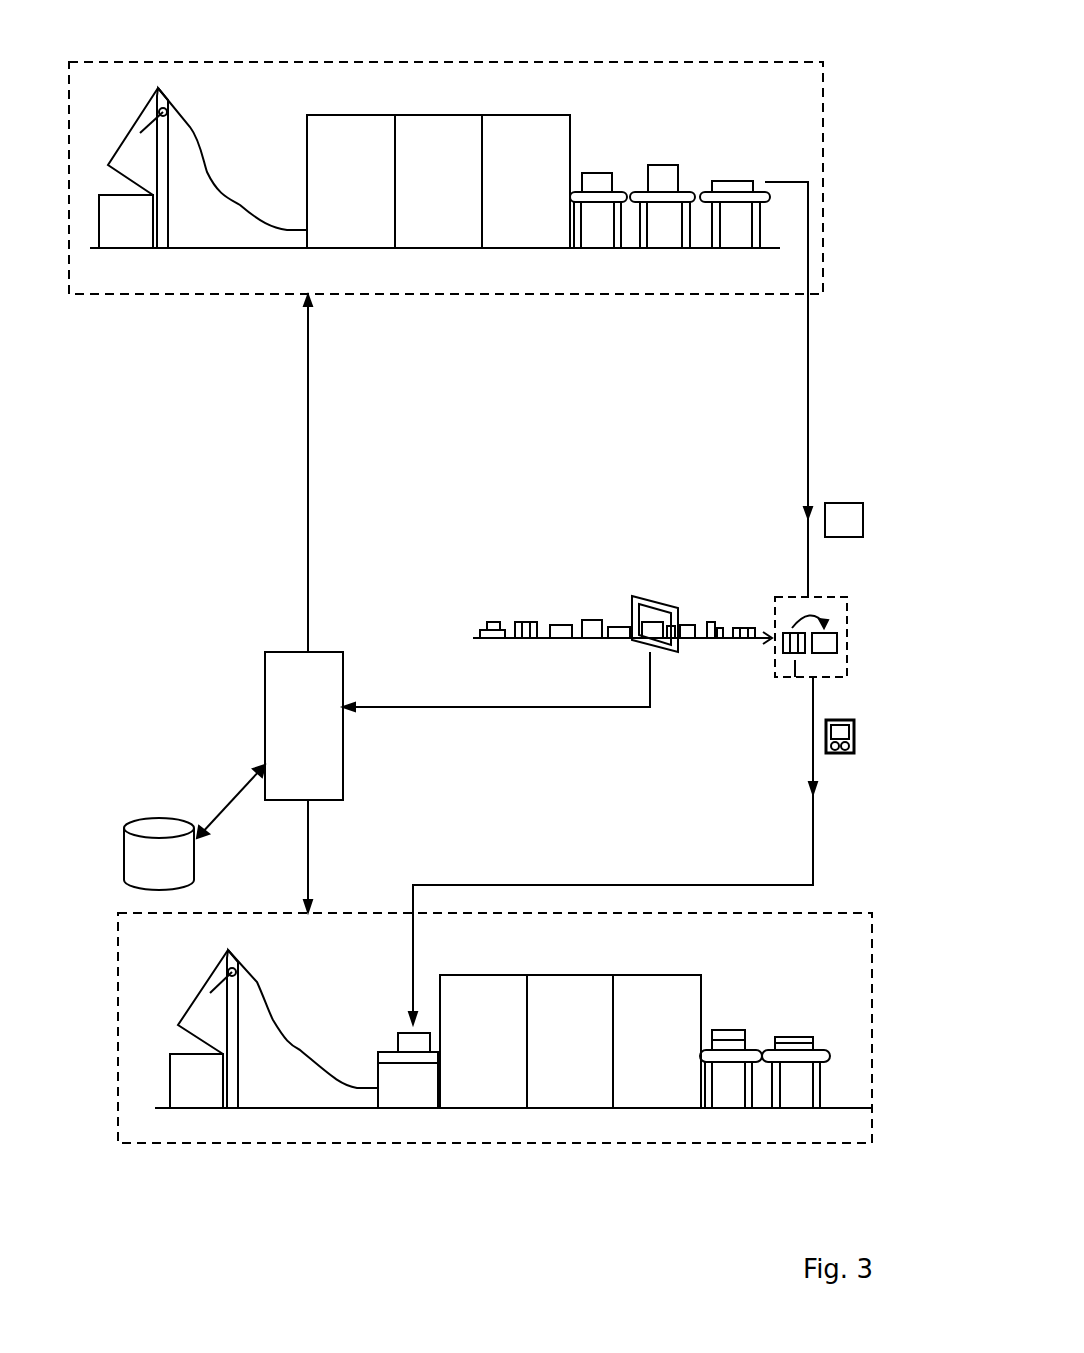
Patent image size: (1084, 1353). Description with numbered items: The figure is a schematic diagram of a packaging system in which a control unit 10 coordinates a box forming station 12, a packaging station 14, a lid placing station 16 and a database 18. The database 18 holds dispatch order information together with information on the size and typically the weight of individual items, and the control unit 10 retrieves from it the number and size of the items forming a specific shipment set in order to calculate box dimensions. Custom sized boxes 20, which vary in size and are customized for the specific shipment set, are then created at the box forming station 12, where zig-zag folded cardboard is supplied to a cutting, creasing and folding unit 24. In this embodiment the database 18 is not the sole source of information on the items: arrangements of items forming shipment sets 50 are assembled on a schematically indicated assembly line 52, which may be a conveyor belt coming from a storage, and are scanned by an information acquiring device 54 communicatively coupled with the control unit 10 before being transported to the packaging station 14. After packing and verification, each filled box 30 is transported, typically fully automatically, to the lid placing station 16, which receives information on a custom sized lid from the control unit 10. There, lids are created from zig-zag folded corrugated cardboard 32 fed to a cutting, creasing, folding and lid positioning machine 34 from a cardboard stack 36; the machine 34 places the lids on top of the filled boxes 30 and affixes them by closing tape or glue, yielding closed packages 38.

The control unit 10 is at (265, 692).
The box forming station 12 is at (185, 295).
The packaging station 14 is at (782, 592).
The lid placing station 16 is at (347, 912).
The database 18 is at (152, 817).
The custom sized boxes 20 is at (595, 178).
The cutting, creasing and folding unit 24 is at (407, 115).
The filled box 30 is at (837, 753).
The zig-zag folded corrugated cardboard 32 is at (300, 1043).
The cutting, creasing, folding and lid positioning machine 34 is at (485, 1090).
The cardboard stack 36 is at (203, 1087).
The closed packages 38 is at (723, 1030).
The shipment set 50 is at (530, 598).
The assembly line 52 is at (500, 641).
The information acquiring device 54 is at (642, 593).